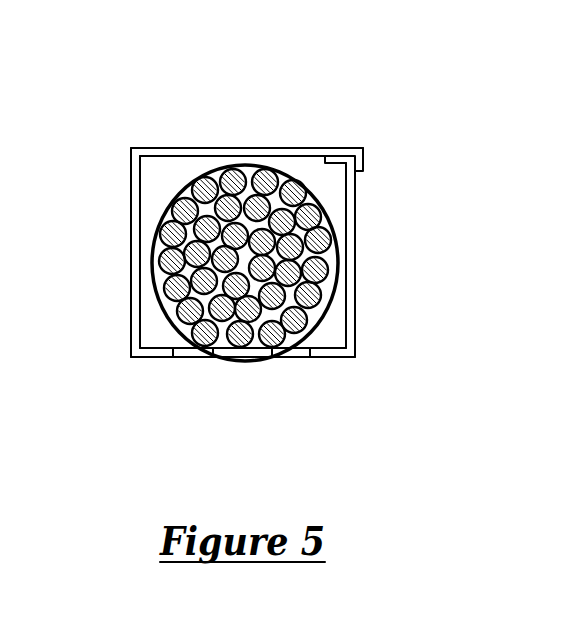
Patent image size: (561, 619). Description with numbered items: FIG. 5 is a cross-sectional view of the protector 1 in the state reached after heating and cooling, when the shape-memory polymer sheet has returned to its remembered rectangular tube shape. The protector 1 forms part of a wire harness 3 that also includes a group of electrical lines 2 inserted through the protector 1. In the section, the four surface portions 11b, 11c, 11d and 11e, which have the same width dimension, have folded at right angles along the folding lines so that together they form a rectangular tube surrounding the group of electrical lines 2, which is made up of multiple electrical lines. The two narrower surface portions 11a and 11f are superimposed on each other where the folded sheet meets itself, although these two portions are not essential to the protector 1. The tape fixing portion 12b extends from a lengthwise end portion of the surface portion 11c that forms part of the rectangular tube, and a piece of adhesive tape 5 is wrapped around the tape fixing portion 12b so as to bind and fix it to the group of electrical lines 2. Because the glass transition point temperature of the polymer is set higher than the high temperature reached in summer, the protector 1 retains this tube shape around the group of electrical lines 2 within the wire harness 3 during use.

The protector 1 is at (158, 148).
The group of electrical lines 2 is at (297, 347).
The wire harness 3 is at (352, 83).
The pieces of adhesive tape 5 is at (317, 321).
The surface portion 11a is at (346, 187).
The surface portion 11b is at (355, 268).
The surface portion 11c is at (153, 358).
The surface portion 11d is at (132, 221).
The surface portion 11e is at (237, 152).
The surface portion 11f is at (364, 156).
The tape fixing portion 12b is at (254, 351).